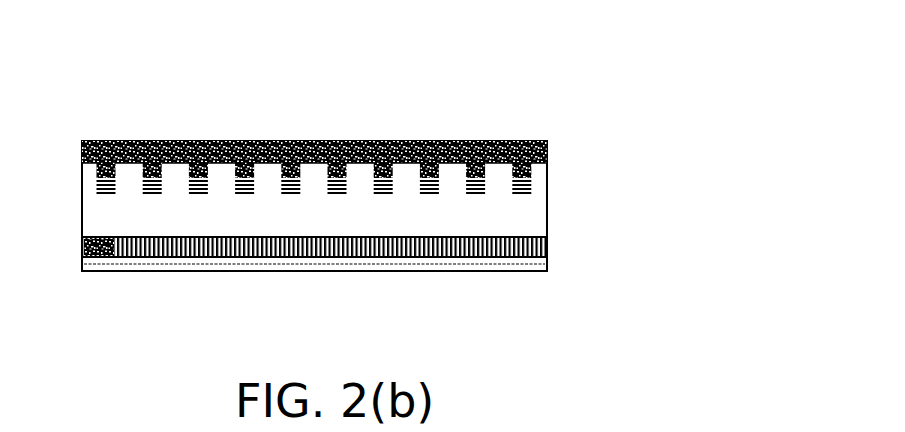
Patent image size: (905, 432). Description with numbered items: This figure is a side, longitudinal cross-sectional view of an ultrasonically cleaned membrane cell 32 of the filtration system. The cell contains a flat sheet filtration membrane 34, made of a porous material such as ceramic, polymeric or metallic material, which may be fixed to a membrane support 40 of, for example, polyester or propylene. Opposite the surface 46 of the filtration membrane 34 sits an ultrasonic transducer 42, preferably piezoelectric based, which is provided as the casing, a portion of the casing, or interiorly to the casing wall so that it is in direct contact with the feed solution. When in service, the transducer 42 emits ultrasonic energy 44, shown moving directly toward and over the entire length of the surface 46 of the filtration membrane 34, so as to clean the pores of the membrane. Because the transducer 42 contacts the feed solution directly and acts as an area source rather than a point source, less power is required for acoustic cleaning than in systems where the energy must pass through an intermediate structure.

The membrane cell 32 is at (528, 50).
The filtration membrane 34 is at (520, 255).
The membrane support 40 is at (405, 265).
The ultrasonic transducer 42 is at (378, 142).
The ultrasonic energy 44 is at (222, 142).
The surface of the filtration membrane 46 is at (100, 240).